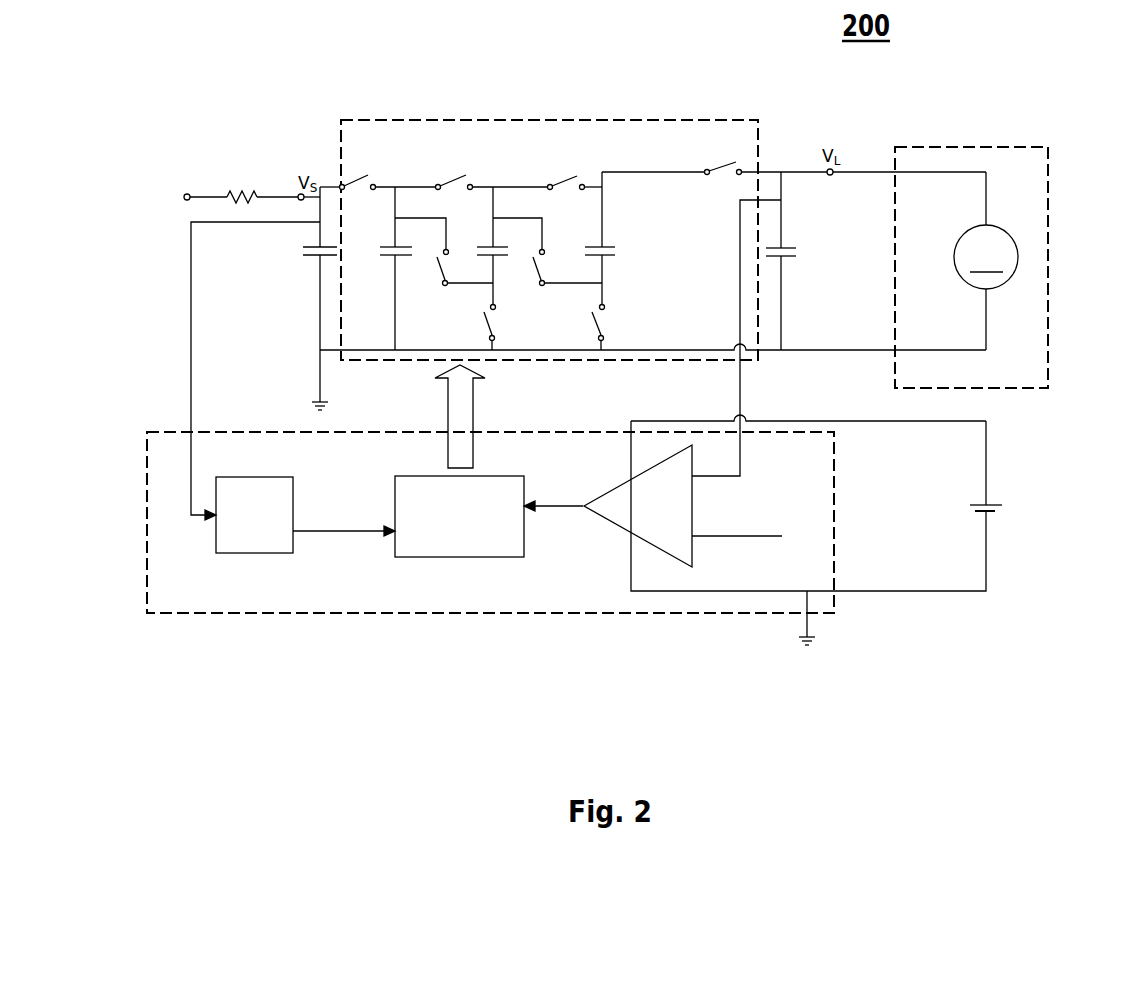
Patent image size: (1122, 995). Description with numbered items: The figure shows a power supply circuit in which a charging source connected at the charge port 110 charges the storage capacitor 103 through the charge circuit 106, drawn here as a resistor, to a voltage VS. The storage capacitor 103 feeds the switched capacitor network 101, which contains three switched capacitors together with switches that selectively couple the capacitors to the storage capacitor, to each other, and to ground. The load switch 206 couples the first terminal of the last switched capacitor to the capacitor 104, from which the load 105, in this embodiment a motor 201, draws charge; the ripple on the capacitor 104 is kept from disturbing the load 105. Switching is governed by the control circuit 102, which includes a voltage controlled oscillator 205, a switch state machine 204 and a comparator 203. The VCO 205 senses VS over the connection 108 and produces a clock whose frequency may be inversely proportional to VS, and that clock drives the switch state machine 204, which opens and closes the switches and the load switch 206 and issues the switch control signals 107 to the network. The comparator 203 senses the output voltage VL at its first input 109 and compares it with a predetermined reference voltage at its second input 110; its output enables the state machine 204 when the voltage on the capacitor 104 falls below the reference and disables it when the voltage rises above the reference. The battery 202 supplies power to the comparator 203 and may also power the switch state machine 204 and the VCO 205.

The switched capacitor network 101 is at (625, 125).
The control circuit 102 is at (500, 613).
The storage capacitor 103 is at (307, 260).
The capacitor 104 is at (797, 263).
The load 105 is at (973, 147).
The charge circuit 106 is at (243, 172).
The switch control signals 107 is at (482, 403).
The input 108 is at (202, 390).
The first input 109 is at (742, 393).
The charge port 110 is at (182, 207).
The motor 201 is at (1023, 255).
The battery 202 is at (1005, 515).
The comparator 203 is at (693, 505).
The switch state machine 204 is at (468, 557).
The voltage controlled oscillator (VCO) 205 is at (258, 553).
The load switch 206 is at (723, 175).